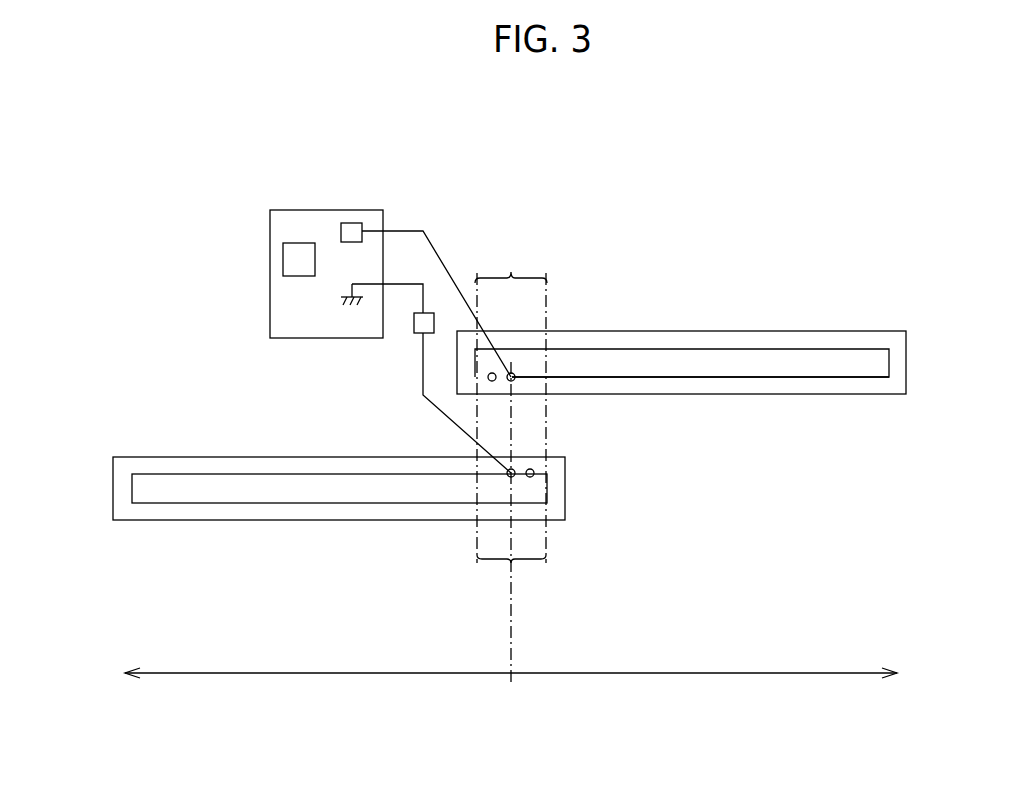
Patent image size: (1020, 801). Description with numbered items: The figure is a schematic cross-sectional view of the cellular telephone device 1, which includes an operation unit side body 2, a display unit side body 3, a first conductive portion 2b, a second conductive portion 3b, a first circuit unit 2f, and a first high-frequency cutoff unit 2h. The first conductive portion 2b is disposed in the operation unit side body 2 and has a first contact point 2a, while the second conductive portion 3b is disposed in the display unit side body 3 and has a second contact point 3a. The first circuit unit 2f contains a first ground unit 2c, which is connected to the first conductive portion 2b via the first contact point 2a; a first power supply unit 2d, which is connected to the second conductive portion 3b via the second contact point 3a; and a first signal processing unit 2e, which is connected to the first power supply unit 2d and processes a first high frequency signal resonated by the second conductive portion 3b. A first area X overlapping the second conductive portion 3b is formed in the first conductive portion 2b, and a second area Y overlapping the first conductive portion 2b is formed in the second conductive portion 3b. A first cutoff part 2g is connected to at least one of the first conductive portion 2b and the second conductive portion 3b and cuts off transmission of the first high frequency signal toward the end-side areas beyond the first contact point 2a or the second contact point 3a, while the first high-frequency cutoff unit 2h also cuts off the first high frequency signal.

The cellular telephone device 1 is at (832, 165).
The operation unit side body 2 is at (152, 522).
The first contact point 2a is at (514, 470).
The first conductive portion 2b is at (222, 488).
The first ground unit 2c is at (341, 297).
The first power supply unit 2d is at (352, 223).
The first signal processing unit 2e is at (288, 265).
The first circuit unit 2f is at (283, 210).
The first cutoff part 2g is at (533, 477).
The first high-frequency cutoff unit 2h is at (427, 313).
The display unit side body 3 is at (881, 331).
The second contact point 3a is at (508, 380).
The second conductive portion 3b is at (858, 362).